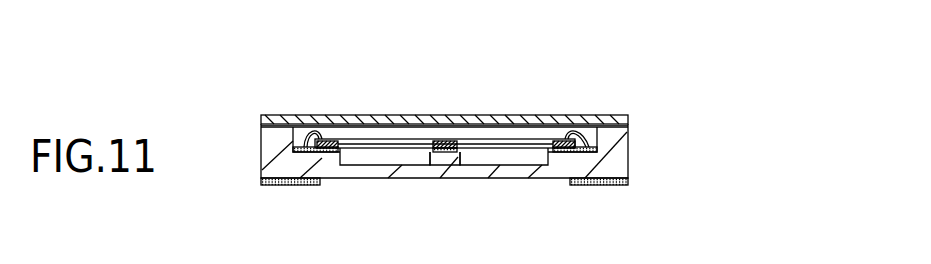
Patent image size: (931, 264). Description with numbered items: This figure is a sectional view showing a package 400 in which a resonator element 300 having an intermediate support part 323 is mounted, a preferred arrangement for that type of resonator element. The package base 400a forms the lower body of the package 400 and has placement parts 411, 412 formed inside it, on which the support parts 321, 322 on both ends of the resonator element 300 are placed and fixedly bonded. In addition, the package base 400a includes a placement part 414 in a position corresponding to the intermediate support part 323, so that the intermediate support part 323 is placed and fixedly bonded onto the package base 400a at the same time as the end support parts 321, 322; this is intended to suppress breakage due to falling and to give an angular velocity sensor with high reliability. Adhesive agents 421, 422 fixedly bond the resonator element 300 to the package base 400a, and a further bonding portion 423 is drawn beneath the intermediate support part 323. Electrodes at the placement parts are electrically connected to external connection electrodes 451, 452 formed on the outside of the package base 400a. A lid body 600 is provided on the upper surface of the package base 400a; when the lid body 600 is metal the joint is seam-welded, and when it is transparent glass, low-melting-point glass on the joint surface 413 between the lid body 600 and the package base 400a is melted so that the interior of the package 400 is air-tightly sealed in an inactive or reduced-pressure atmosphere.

The resonator element 300 is at (395, 139).
The support part 321 is at (322, 140).
The support part 322 is at (560, 139).
The intermediate support part 323 is at (442, 141).
The package 400 is at (730, 114).
The package base 400a is at (620, 150).
The placement part 411 is at (330, 147).
The placement part 412 is at (566, 147).
The joint surface 413 is at (608, 114).
The placement part 414 is at (447, 148).
The adhesive agent 421 is at (342, 152).
The adhesive agent 422 is at (545, 152).
The through electrode 423 is at (460, 152).
The external connection electrode 451 is at (287, 185).
The external connection electrode 452 is at (598, 185).
The lid body 600 is at (628, 122).